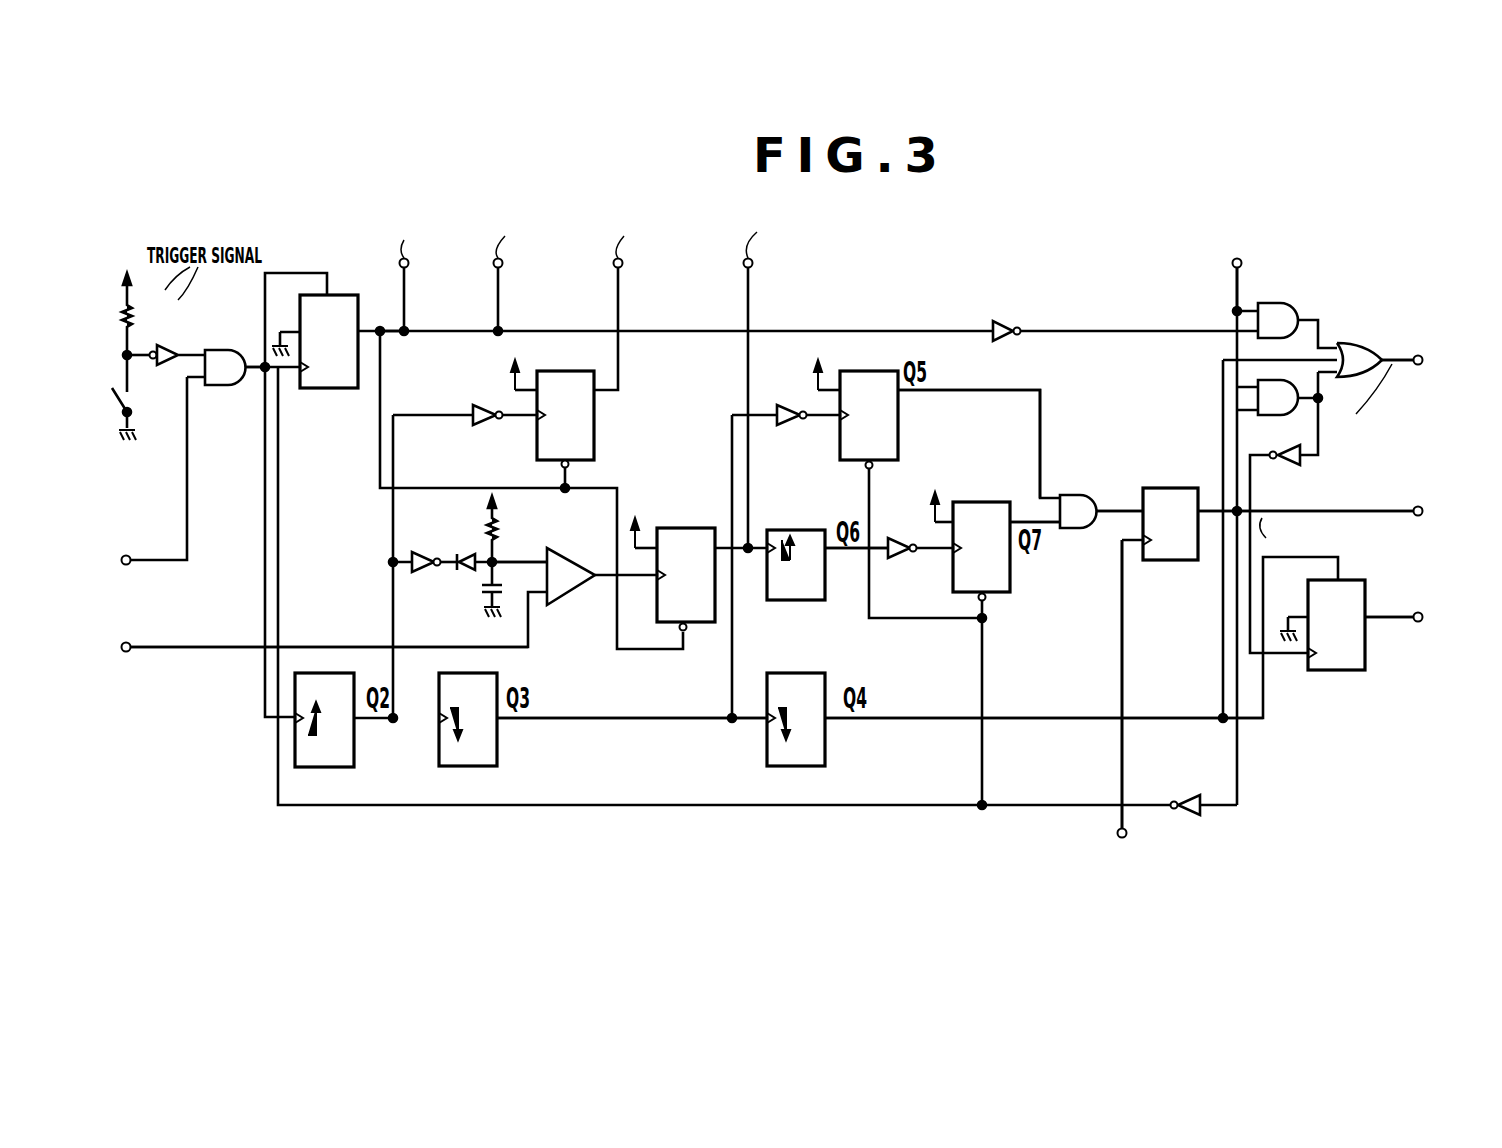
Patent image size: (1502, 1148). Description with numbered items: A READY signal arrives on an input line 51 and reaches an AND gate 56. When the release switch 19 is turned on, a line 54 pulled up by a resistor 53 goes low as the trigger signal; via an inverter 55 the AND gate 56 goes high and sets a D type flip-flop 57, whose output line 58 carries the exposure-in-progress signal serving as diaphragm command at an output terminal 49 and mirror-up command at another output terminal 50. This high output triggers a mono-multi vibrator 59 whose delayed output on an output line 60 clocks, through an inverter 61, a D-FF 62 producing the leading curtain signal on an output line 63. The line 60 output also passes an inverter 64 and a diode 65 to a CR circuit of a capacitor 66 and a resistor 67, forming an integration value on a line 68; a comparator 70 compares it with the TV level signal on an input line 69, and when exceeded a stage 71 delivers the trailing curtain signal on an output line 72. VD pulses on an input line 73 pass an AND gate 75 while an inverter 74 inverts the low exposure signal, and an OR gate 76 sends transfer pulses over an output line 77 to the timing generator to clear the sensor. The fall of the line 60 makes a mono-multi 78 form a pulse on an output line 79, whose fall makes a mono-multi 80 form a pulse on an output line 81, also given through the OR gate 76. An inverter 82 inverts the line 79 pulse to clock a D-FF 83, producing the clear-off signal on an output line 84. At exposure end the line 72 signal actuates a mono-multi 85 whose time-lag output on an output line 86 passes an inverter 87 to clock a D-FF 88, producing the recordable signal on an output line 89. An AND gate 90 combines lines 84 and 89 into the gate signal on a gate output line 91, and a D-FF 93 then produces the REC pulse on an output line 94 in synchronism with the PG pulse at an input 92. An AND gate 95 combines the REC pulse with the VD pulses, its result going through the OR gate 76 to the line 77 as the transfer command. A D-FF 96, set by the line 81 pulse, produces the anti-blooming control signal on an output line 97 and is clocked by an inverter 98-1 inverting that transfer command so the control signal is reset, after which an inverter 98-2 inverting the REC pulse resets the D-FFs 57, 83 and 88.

The release switch 19 is at (139, 397).
The output terminal 49 is at (445, 268).
The output terminal 50 is at (542, 268).
The input line 51 is at (152, 496).
The resistor 53 is at (146, 312).
The line 54 is at (147, 334).
The inverter 55 is at (178, 334).
The AND gate 56 is at (226, 344).
The D type flip-flop 57 is at (315, 371).
The output line 58 is at (399, 364).
The mono-multi vibrator 59 is at (338, 737).
The output line 60 is at (379, 748).
The inverter 61 is at (492, 394).
The D-FF 62 is at (581, 414).
The output line 63 is at (643, 298).
The inverter 64 is at (425, 537).
The diode 65 is at (499, 536).
The CR circuit capacitor 66 is at (468, 589).
The CR circuit resistor 67 is at (514, 531).
The line 68 is at (529, 534).
The input line 69 is at (323, 647).
The comparator 70 is at (579, 559).
The D flip-flop 71 is at (673, 550).
The output line 72 is at (785, 352).
The input line 73 is at (1227, 270).
The inverter 74 is at (1006, 303).
The AND gate 75 is at (1290, 302).
The OR gate 76 is at (1399, 328).
The output line 77 is at (1381, 409).
The mono-multi 78 is at (486, 736).
The output line 79 is at (632, 752).
The mono-multi 80 is at (811, 732).
The output line 81 is at (1044, 745).
The inverter 82 is at (789, 388).
The D-FF 83 is at (880, 414).
The output line 84 is at (969, 444).
The mono-multi 85 is at (798, 536).
The output line 86 is at (856, 582).
The inverter 87 is at (901, 518).
The D-FF 88 is at (973, 522).
The output line 89 is at (1042, 553).
The AND gate 90 is at (1102, 459).
The gate output line 91 is at (1120, 474).
The PG pulse input line 92 is at (1107, 703).
The D-FF 93 is at (1173, 494).
The output line 94 is at (1310, 512).
The AND gate 95 is at (1272, 416).
The D-FF 96 is at (1322, 657).
The output line 97 is at (1413, 625).
The inverter 98-1 is at (1294, 476).
The inverter 98-2 is at (1185, 778).